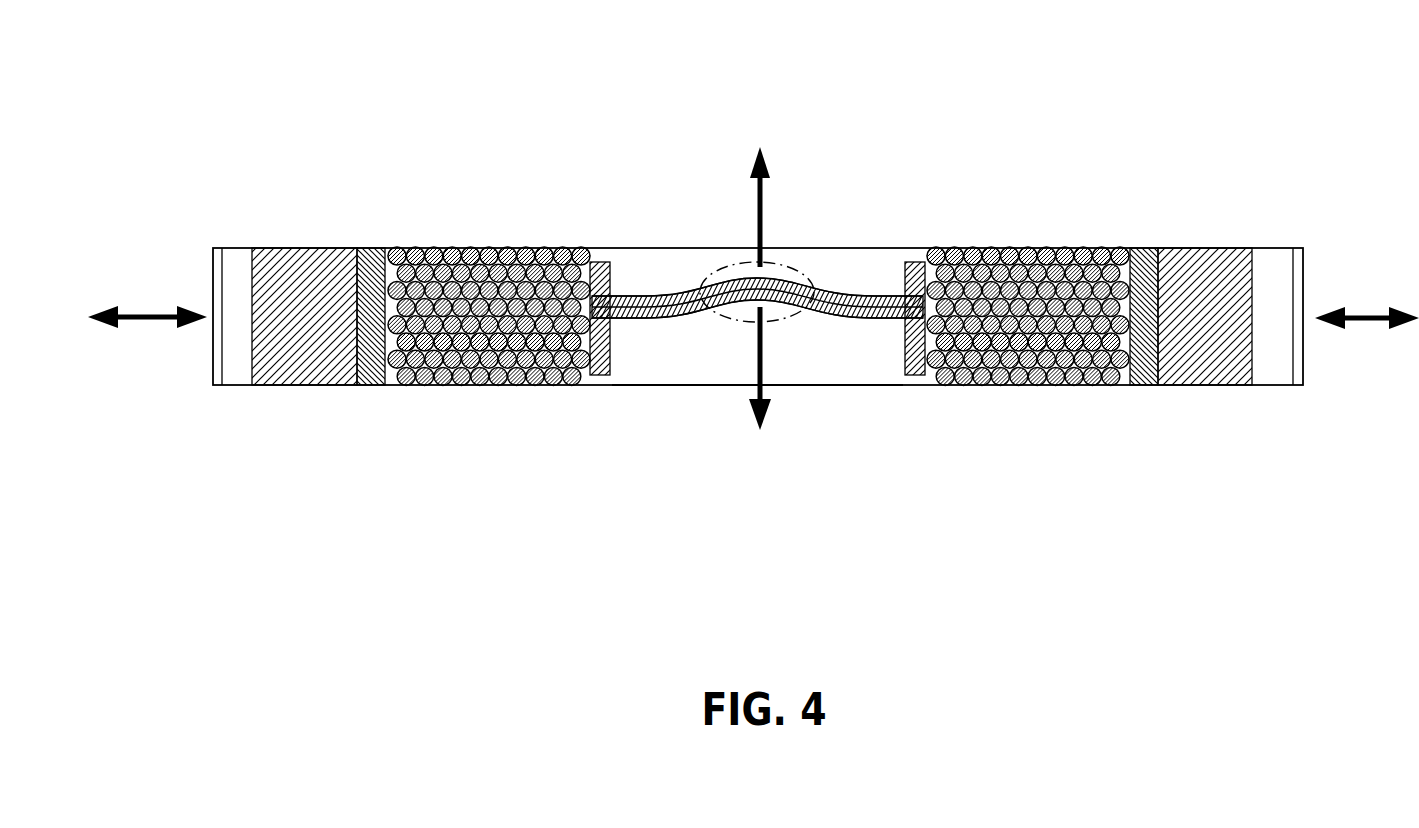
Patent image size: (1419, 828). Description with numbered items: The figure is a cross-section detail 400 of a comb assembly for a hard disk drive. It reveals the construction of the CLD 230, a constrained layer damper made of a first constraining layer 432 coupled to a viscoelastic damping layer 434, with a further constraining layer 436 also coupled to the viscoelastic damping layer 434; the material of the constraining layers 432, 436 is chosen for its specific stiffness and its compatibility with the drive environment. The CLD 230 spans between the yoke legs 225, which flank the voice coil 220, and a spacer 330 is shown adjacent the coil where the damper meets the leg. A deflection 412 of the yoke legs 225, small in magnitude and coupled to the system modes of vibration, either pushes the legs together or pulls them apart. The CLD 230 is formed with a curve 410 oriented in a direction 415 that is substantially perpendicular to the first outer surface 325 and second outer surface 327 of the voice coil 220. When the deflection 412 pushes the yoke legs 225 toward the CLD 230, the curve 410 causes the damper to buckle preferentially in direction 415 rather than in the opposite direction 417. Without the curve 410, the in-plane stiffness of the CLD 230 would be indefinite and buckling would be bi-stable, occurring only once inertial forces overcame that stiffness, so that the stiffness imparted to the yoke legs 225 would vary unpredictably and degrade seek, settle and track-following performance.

The cross-section detail 400 is at (780, 52).
The voice coil 220 is at (1027, 250).
The yoke legs 225 is at (303, 363).
The CLD 230 is at (860, 368).
The first outer surface 325 is at (490, 247).
The second outer surface 327 is at (483, 387).
The spacer 330 is at (904, 264).
The curve 410 is at (700, 262).
The deflection 412 is at (142, 312).
The direction 415 is at (763, 225).
The direction 417 is at (760, 355).
The first constraining layer 432 is at (657, 262).
The viscoelastic damping layer 434 is at (683, 385).
The constraining layer 436 is at (645, 385).